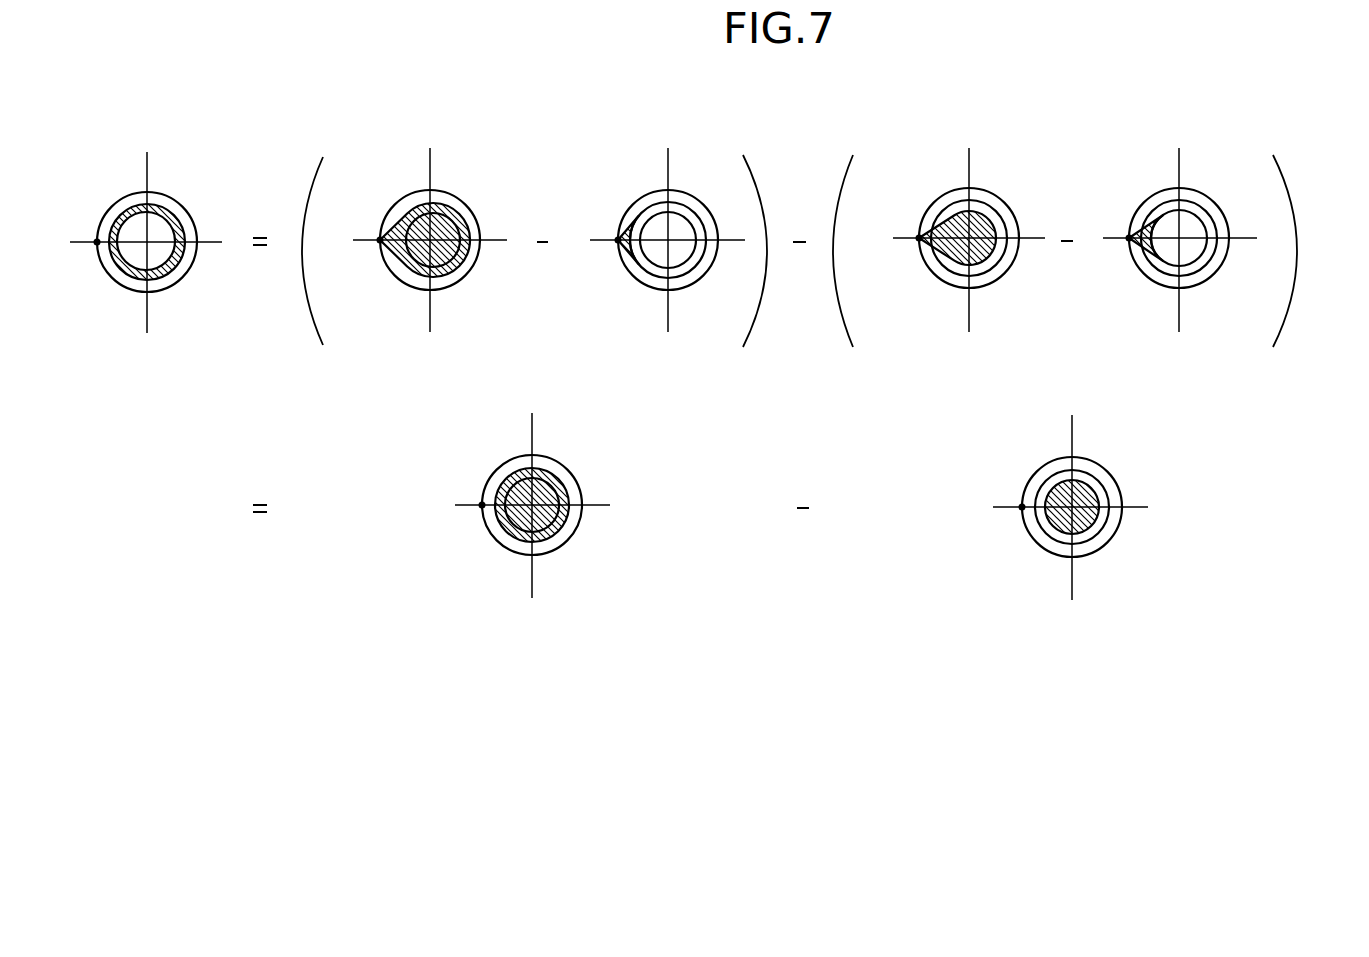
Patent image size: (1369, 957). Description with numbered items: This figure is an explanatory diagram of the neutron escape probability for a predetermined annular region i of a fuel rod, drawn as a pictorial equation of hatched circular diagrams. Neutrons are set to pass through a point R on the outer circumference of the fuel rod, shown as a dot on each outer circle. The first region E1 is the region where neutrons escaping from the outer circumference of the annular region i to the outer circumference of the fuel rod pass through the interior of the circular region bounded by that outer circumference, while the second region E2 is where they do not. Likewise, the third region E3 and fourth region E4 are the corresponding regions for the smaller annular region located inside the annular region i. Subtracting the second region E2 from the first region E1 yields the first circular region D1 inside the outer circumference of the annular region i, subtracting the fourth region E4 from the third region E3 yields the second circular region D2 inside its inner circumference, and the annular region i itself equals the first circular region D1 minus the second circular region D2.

The point on the outer circumference R is at (590, 360).
The predetermined annular region i is at (178, 213).
The first region E1 is at (460, 218).
The second region E2 is at (631, 223).
The third region E3 is at (993, 225).
The fourth region E4 is at (1155, 228).
The first circular region D1 is at (562, 480).
The second circular region D2 is at (1093, 490).